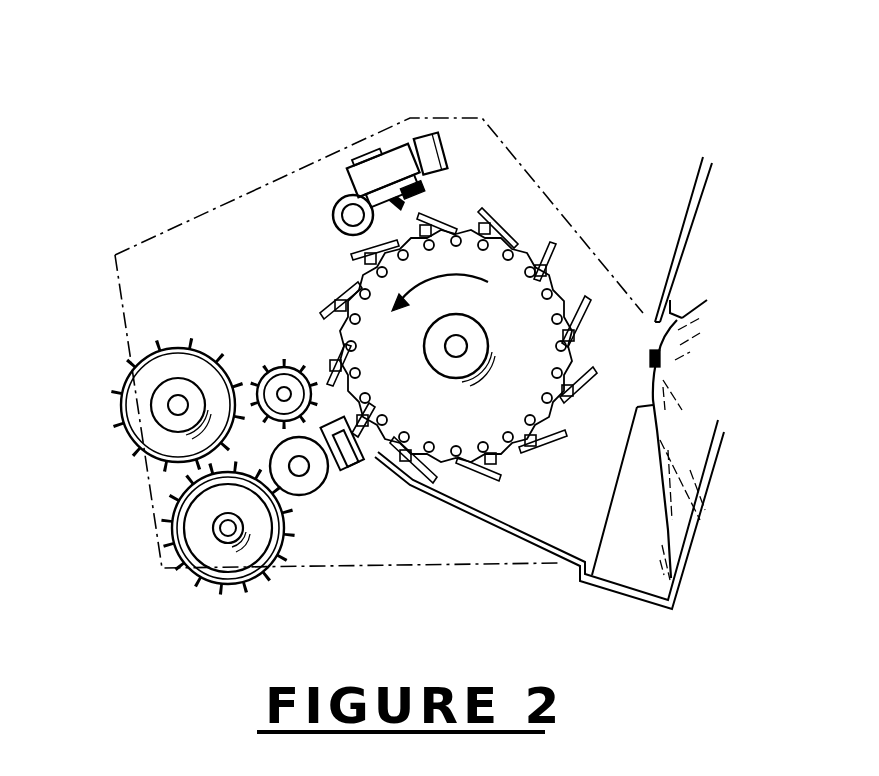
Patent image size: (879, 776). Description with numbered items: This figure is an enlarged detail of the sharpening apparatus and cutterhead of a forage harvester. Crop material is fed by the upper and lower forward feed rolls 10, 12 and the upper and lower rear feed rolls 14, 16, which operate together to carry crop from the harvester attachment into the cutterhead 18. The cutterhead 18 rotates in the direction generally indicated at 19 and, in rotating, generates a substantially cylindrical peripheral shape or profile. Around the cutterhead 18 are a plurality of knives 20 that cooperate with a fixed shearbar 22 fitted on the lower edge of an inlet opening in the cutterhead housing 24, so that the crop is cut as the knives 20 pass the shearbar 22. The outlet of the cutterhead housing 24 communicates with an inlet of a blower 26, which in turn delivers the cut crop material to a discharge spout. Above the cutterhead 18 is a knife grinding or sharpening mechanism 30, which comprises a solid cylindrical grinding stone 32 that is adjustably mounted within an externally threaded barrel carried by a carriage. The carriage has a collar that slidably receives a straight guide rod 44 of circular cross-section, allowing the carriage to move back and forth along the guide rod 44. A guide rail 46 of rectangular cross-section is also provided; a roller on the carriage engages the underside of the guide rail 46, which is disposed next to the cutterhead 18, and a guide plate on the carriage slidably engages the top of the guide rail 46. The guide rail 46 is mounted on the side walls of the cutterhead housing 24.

The upper forward feed roll 10 is at (118, 378).
The lower forward feed roll 12 is at (187, 570).
The upper rear feed roll 14 is at (272, 347).
The lower rear feed roll 16 is at (313, 493).
The cutterhead 18 is at (525, 226).
The direction of rotation 19 is at (488, 282).
The knives 20 is at (557, 265).
The shearbar 22 is at (353, 470).
The cutterhead housing 24 is at (493, 527).
The blower 26 is at (724, 500).
The sharpening mechanism 30 is at (378, 108).
The grinding stone 32 is at (435, 204).
The guide rod 44 is at (333, 215).
The guide rail 46 is at (466, 118).